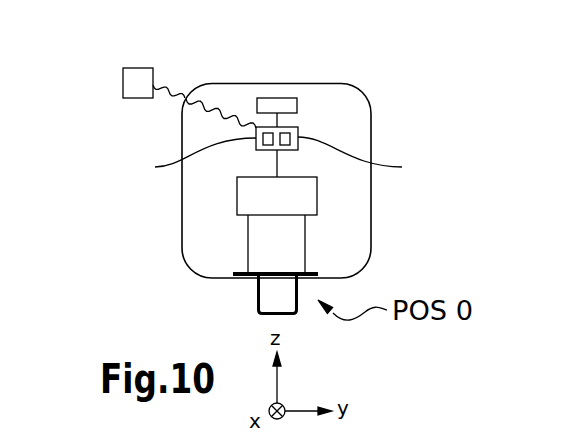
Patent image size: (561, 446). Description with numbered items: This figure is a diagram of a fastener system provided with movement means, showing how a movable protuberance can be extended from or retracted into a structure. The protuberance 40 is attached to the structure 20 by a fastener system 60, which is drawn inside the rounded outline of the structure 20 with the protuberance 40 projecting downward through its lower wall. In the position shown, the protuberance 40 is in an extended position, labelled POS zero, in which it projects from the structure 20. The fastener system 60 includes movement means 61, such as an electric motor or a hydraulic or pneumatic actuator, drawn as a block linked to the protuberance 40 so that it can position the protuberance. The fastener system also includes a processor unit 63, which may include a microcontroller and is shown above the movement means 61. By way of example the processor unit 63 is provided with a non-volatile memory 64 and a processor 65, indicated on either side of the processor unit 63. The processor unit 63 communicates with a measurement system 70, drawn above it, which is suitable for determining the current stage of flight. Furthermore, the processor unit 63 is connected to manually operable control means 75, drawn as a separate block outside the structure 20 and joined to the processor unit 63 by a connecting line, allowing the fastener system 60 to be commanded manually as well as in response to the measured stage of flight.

The structure 20 is at (371, 100).
The protuberance 40 is at (257, 297).
The fastener system 60 is at (338, 224).
The movement means 61 is at (327, 190).
The processor unit 63 is at (298, 133).
The non-volatile memory 64 is at (189, 159).
The processor 65 is at (365, 157).
The measurement system 70 is at (270, 98).
The manually operable control means 75 is at (123, 82).